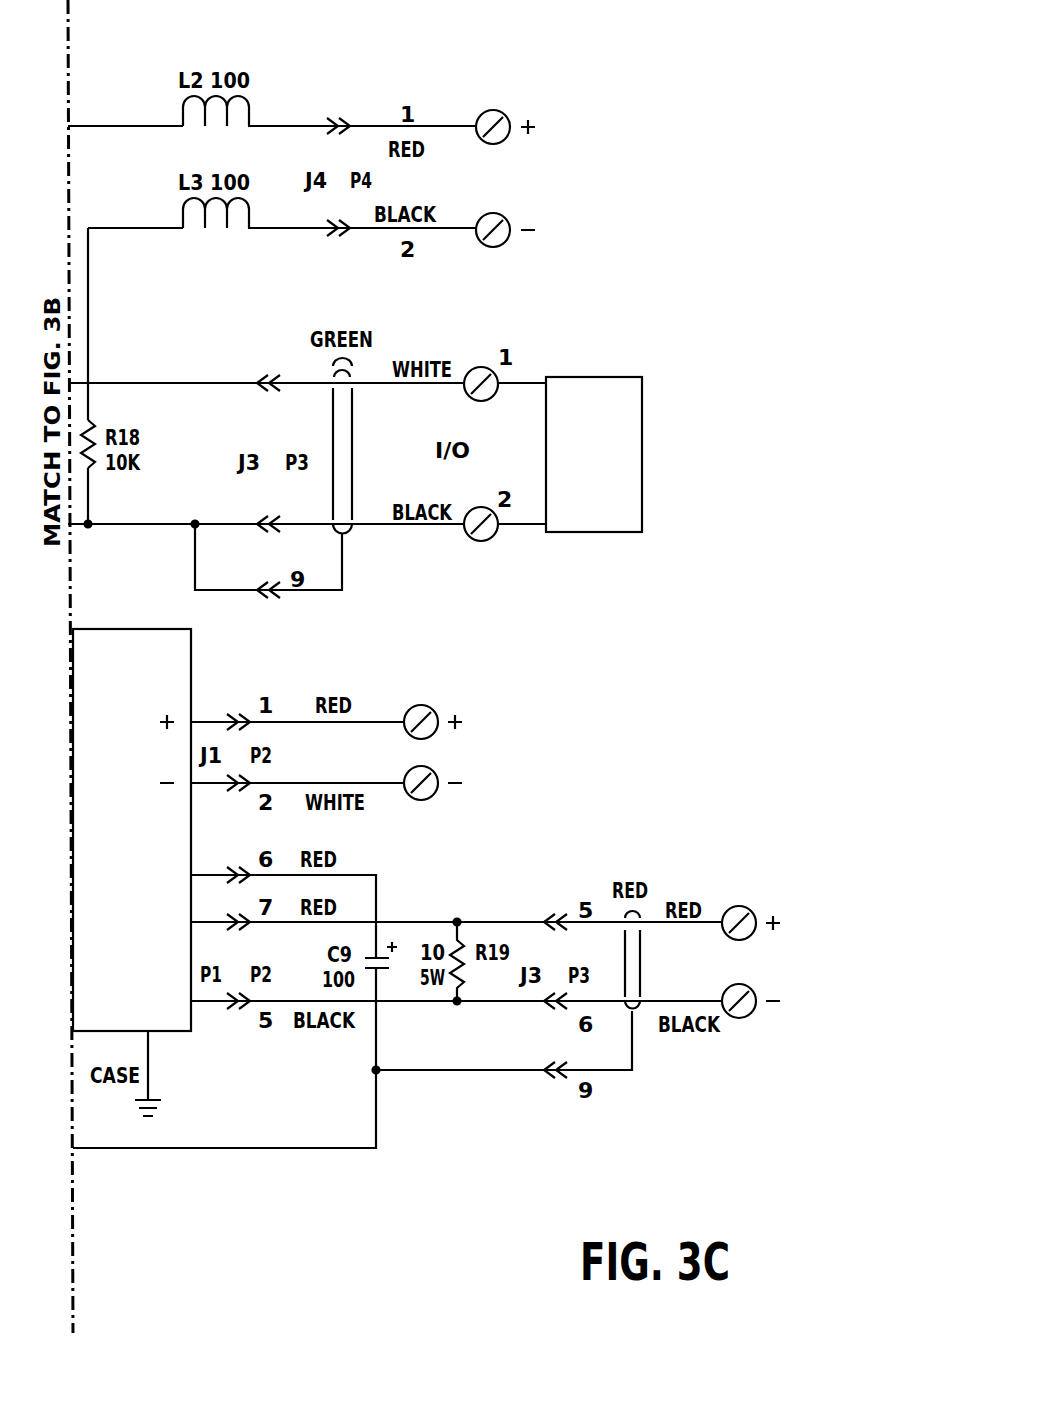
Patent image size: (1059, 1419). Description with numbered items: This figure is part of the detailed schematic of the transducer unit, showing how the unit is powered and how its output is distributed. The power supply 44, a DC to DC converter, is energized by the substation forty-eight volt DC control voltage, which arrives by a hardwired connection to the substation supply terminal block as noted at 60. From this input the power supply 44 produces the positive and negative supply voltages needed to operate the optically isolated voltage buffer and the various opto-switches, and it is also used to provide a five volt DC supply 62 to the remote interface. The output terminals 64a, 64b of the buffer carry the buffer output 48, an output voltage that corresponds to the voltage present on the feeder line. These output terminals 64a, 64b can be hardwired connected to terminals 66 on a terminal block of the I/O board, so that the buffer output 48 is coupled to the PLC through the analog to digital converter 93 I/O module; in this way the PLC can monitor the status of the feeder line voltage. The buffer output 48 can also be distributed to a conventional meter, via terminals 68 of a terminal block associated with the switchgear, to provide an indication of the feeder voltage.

The terminals of a terminal block 68 is at (566, 123).
The terminals on terminal block of I/O board 66 is at (515, 357).
The analog to digital converter I/O module 93 is at (592, 376).
The buffer output 48 is at (494, 552).
The output terminal of buffer 64a is at (132, 383).
The output terminal of buffer 64b is at (132, 524).
The power supply 44 is at (100, 628).
The hardwired connection to terminal block TB1 60 is at (490, 678).
The +5 VDC supply 62 is at (800, 878).